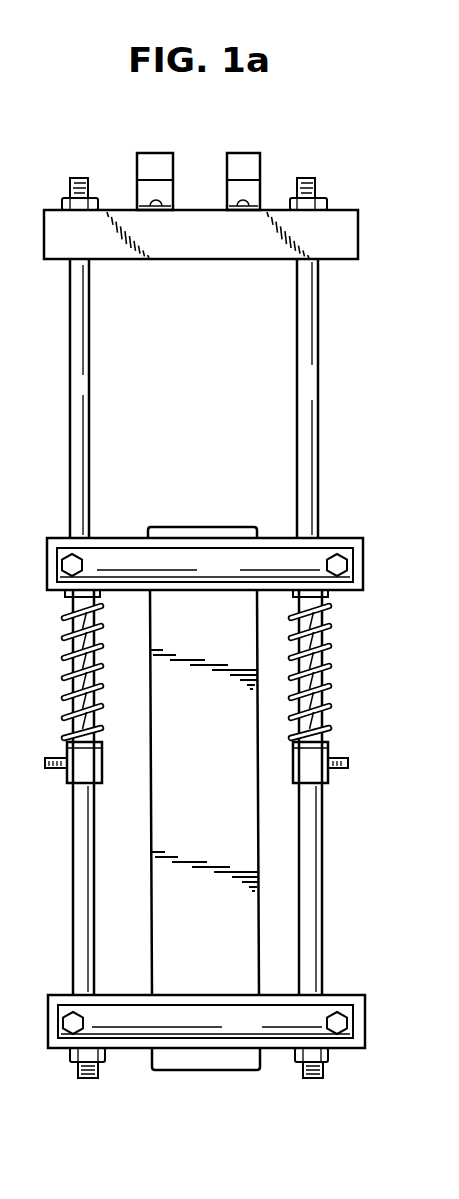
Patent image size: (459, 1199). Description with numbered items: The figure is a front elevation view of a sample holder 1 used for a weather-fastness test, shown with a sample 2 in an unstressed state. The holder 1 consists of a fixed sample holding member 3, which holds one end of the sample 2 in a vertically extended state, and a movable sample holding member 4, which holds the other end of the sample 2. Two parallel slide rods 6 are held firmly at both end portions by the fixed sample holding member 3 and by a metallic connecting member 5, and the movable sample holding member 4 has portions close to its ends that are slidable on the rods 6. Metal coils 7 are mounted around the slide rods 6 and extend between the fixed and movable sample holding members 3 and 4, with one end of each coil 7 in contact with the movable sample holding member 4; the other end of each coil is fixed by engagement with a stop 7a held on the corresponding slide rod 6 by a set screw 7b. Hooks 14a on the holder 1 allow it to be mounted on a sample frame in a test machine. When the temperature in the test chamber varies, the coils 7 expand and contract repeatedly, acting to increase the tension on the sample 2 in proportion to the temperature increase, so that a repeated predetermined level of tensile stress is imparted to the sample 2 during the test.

The holder 1 is at (50, 422).
The sample 2 is at (163, 878).
The fixed sample holding member 3 is at (112, 1028).
The movable sample holding member 4 is at (88, 553).
The metallic connecting member 5 is at (50, 239).
The slide rod 6 is at (84, 385).
The metal coil 7 is at (72, 683).
The stop 7a is at (96, 783).
The set screw 7b is at (56, 758).
The hook 14a is at (241, 158).